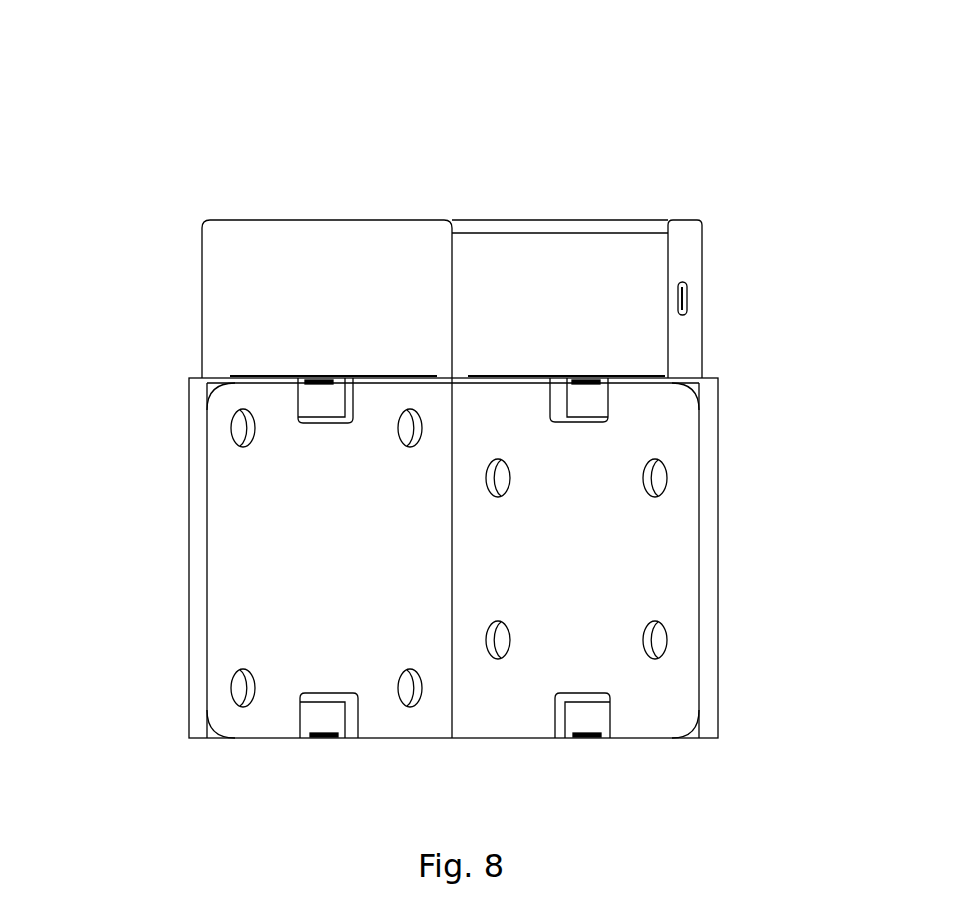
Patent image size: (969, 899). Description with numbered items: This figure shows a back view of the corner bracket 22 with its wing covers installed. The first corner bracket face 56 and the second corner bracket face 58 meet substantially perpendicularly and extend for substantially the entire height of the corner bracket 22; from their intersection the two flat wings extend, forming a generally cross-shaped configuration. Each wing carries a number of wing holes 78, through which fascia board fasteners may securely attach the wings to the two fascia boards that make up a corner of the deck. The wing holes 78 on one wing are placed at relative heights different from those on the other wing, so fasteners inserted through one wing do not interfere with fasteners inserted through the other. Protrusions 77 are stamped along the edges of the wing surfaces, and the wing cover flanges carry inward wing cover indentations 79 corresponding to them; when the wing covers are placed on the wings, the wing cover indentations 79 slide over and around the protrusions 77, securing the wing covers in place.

The corner bracket 22 is at (443, 155).
The first corner bracket face 56 is at (560, 288).
The second corner bracket face 58 is at (315, 310).
The protrusion 77 is at (311, 402).
The wing hole 78 is at (240, 429).
The wing cover indentation 79 is at (318, 384).